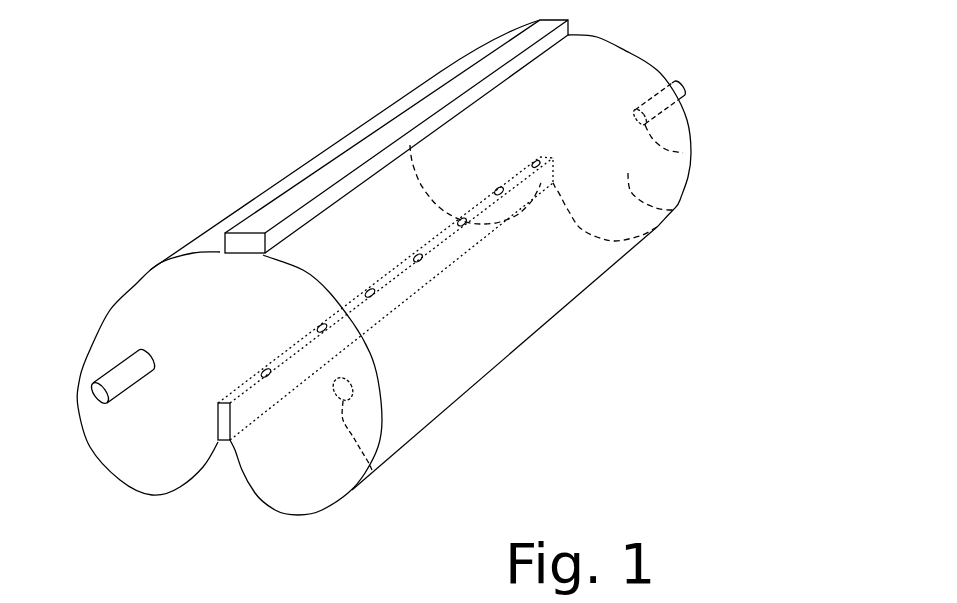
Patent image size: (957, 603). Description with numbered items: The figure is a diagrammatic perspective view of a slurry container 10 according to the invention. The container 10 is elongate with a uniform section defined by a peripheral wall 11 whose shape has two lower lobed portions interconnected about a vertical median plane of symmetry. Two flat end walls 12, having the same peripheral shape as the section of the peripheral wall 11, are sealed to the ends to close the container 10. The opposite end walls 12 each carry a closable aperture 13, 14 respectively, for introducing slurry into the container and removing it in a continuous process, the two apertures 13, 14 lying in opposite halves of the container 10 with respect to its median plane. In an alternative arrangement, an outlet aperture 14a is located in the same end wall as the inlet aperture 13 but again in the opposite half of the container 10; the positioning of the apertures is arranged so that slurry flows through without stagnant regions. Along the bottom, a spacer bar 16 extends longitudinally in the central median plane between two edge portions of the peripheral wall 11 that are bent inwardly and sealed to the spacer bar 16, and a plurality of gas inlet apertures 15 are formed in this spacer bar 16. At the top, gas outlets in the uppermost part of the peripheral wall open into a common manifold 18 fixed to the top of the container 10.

The slurry container 10 is at (82, 466).
The peripheral wall 11 is at (455, 348).
The end wall 12 is at (322, 503).
The closable aperture 13 is at (148, 363).
The closable aperture 14 is at (693, 152).
The outlet aperture 14a is at (355, 490).
The gas inlet apertures 15 is at (268, 385).
The spacer bar 16 is at (229, 443).
The common manifold 18 is at (338, 143).